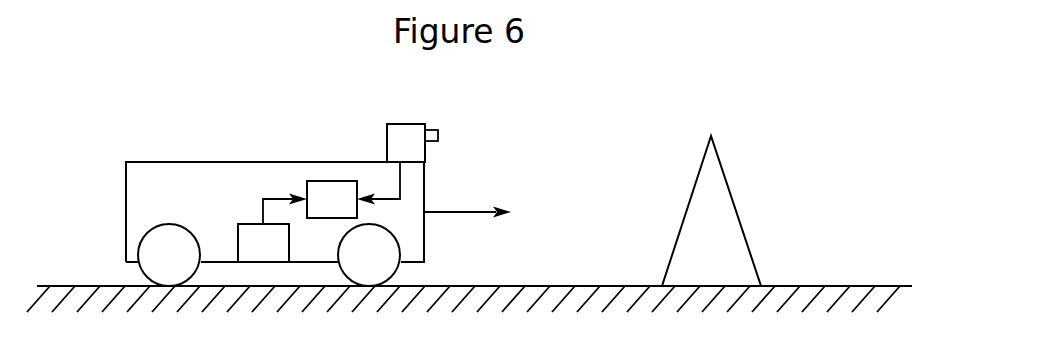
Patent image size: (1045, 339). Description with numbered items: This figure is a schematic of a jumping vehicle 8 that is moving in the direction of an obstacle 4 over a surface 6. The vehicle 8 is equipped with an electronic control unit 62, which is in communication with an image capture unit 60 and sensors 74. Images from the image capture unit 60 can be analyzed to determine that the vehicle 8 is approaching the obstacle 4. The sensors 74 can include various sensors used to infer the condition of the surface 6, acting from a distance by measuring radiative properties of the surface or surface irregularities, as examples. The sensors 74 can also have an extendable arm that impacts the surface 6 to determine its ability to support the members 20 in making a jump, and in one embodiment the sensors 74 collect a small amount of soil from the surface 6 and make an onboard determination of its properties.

The obstacle 4 is at (700, 240).
The surface 6 is at (867, 272).
The vehicle 8 is at (178, 202).
The members 20 is at (153, 267).
The sensor 60 is at (407, 140).
The electronic control unit 62 is at (316, 212).
The sensors 74 is at (247, 259).